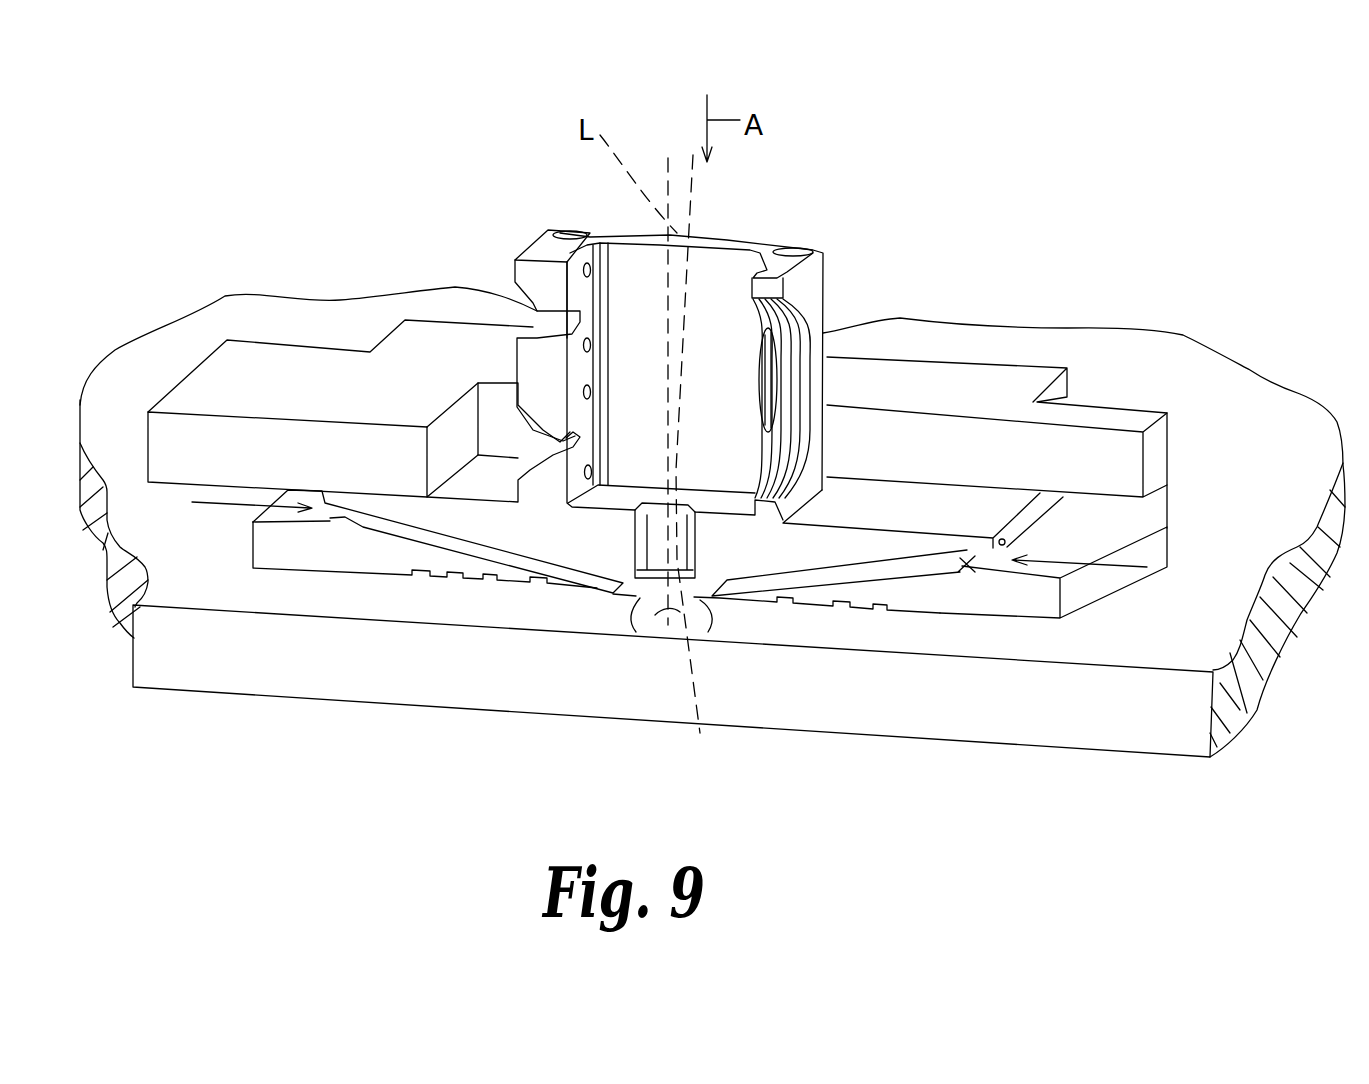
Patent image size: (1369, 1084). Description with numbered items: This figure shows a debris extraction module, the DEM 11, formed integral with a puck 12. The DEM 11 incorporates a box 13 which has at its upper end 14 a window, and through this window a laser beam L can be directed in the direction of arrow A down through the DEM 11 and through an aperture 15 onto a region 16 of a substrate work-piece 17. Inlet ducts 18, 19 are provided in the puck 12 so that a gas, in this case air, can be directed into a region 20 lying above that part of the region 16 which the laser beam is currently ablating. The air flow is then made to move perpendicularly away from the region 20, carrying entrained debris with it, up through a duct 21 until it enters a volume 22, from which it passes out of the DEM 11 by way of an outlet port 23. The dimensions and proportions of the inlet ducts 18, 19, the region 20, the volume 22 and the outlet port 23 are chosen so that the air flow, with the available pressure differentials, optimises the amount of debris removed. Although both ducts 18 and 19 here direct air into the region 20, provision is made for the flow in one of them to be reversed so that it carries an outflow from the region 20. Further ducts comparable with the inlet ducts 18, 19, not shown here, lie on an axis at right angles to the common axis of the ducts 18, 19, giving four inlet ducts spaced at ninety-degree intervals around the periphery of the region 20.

The DEM 11 is at (845, 247).
The puck 12 is at (1100, 524).
The box 13 is at (540, 250).
The upper end 14 is at (727, 276).
The aperture 15 is at (678, 627).
The region 16 is at (702, 463).
The substrate work-piece 17 is at (866, 703).
The inlet duct 18 is at (957, 560).
The inlet duct 19 is at (353, 525).
The region 20 is at (643, 597).
The duct 21 is at (643, 610).
The volume 22 is at (708, 352).
The outlet port 23 is at (775, 380).